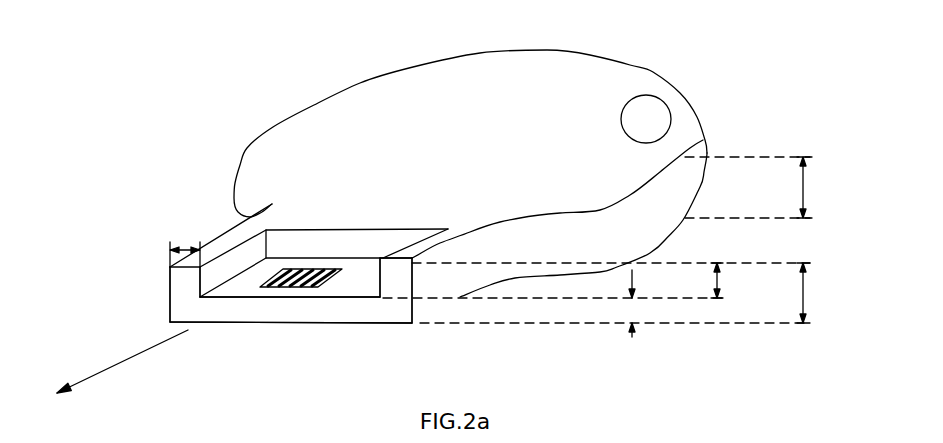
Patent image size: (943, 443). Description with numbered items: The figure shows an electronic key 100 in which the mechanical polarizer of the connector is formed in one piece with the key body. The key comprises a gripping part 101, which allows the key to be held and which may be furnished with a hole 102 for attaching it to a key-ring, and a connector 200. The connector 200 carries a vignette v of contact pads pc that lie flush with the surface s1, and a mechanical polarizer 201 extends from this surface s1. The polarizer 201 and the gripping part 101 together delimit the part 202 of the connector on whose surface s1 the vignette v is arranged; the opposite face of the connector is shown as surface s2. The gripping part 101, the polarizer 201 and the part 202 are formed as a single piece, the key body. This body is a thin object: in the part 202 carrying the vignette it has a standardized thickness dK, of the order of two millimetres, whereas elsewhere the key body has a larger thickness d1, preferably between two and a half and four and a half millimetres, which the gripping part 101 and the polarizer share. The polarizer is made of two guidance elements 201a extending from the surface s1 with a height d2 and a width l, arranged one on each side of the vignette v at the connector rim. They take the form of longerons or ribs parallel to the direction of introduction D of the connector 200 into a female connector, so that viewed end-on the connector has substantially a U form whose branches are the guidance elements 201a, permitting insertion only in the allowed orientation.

The electronic key 100 is at (652, 72).
The gripping part 101 is at (332, 120).
The hole 102 is at (652, 117).
The connector 200 is at (150, 196).
The mechanical polarizer 201 is at (225, 240).
The guidance elements 201a is at (178, 293).
The part of the connector 202 is at (357, 258).
The contact pads pc is at (308, 268).
The vignette v is at (262, 288).
The surface s1 is at (337, 292).
The bottom surface s2 is at (363, 322).
The thickness d1 is at (626, 240).
The height d2 is at (568, 280).
The standardized thickness dK is at (650, 303).
The width l is at (185, 242).
The direction of introduction D is at (122, 361).